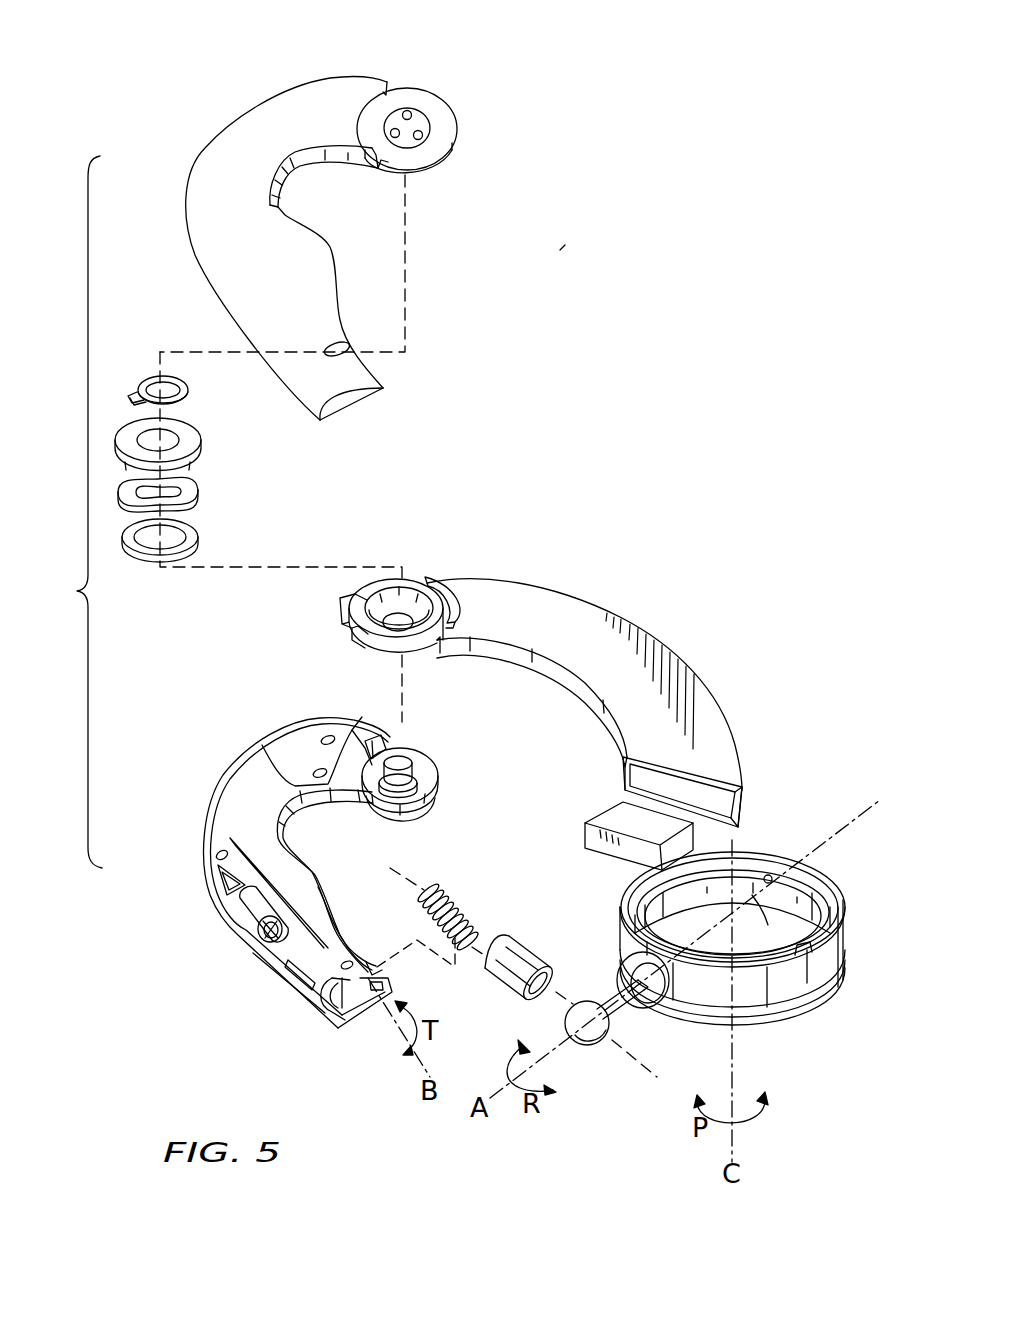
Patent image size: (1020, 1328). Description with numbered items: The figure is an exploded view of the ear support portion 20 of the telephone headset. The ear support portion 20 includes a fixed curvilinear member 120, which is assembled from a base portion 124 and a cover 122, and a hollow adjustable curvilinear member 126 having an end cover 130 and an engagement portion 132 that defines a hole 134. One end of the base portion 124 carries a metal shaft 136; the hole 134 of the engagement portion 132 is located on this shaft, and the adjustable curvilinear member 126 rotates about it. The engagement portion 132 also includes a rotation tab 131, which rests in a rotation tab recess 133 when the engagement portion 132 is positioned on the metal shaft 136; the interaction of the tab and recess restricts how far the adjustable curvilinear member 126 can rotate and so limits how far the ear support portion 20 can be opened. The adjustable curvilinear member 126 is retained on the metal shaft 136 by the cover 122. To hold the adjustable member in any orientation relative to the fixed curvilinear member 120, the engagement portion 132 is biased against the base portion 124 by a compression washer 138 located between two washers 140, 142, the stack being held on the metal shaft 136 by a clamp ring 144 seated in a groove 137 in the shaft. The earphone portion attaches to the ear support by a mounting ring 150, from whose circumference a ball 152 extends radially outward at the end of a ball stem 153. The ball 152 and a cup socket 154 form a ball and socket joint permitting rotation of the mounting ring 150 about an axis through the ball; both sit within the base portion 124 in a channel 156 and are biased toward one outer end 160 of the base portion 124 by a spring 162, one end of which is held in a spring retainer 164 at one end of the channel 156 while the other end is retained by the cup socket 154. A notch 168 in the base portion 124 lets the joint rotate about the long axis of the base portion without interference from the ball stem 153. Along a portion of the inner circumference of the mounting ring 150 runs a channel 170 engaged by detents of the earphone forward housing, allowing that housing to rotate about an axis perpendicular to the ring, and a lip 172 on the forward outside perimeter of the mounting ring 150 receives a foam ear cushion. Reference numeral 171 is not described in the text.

The ear support portion 20 is at (571, 242).
The fixed curvilinear member 120 is at (69, 512).
The cover 122 is at (278, 103).
The base portion 124 is at (212, 812).
The adjustable curvilinear member 126 is at (597, 698).
The end cover 130 is at (590, 832).
The rotation tab 131 is at (341, 618).
The engagement portion 132 is at (371, 578).
The rotation tab recess 133 is at (379, 737).
The hole 134 is at (413, 612).
The metal shaft 136 is at (420, 772).
The groove 137 is at (414, 774).
The compression washer 138 is at (198, 488).
The washer 140 is at (201, 533).
The washer 142 is at (203, 440).
The clamp ring 144 is at (138, 391).
The mounting ring 150 is at (779, 855).
The ball 152 is at (587, 1046).
The ball stem 153 is at (631, 1008).
The cup socket 154 is at (541, 963).
The channel 156 is at (286, 962).
The outer end 160 is at (350, 1032).
The spring 162 is at (431, 892).
The spring retainer 164 is at (265, 941).
The notch 168 is at (372, 975).
The channel 170 is at (804, 890).
The hole 171 is at (753, 893).
The lip 172 is at (788, 1014).